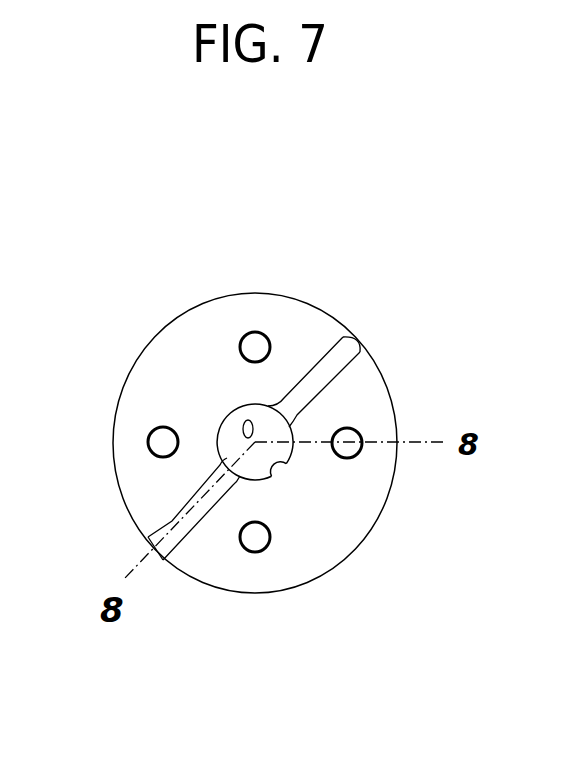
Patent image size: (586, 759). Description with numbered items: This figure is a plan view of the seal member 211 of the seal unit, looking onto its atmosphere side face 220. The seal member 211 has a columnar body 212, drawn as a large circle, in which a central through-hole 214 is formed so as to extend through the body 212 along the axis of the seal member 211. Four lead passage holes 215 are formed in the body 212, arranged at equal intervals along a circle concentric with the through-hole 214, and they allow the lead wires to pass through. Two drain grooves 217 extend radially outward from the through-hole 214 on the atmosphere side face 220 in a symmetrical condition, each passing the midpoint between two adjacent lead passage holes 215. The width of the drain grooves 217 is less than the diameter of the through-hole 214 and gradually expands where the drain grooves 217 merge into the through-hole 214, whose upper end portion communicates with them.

The seal member 211 is at (396, 265).
The columnar body 212 is at (165, 314).
The atmosphere side face 220 is at (135, 377).
The through-hole 214 is at (287, 459).
The lead passage holes 215 is at (259, 343).
The drain grooves 217 is at (352, 340).